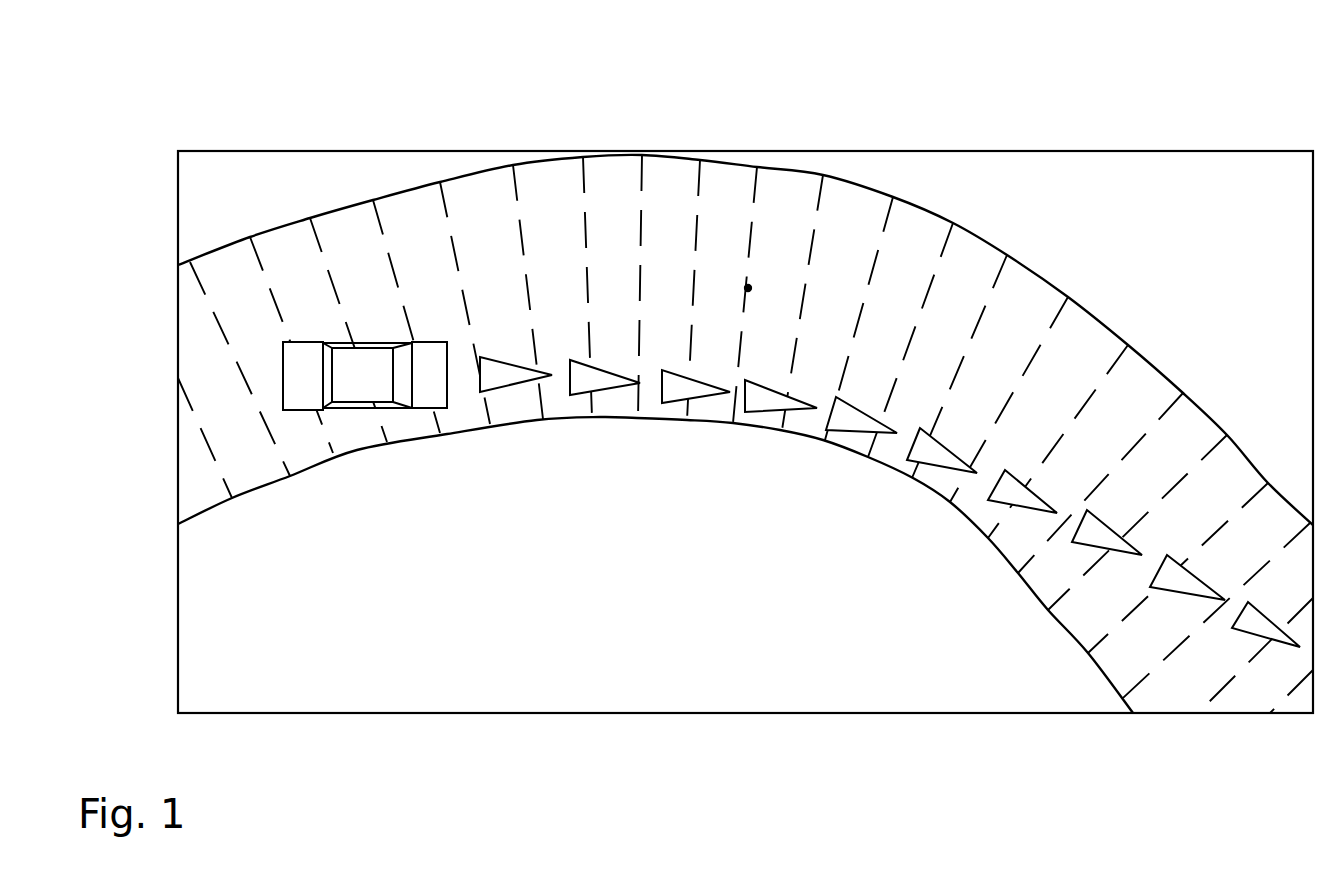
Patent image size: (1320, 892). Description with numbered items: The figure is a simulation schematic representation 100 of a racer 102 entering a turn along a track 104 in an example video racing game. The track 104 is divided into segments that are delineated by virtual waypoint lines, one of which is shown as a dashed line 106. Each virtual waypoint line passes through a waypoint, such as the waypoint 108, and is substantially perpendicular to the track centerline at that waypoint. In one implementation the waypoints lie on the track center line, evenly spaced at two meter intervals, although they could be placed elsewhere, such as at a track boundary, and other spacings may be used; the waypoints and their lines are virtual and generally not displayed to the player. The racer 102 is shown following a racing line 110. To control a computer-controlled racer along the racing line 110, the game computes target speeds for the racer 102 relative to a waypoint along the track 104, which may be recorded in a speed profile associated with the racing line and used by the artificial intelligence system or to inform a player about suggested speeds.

The simulation schematic representation 100 is at (1218, 152).
The racer 102 is at (408, 408).
The track 104 is at (1047, 274).
The dashed line 106 is at (634, 170).
The waypoint 108 is at (748, 288).
The racing line 110 is at (1070, 486).